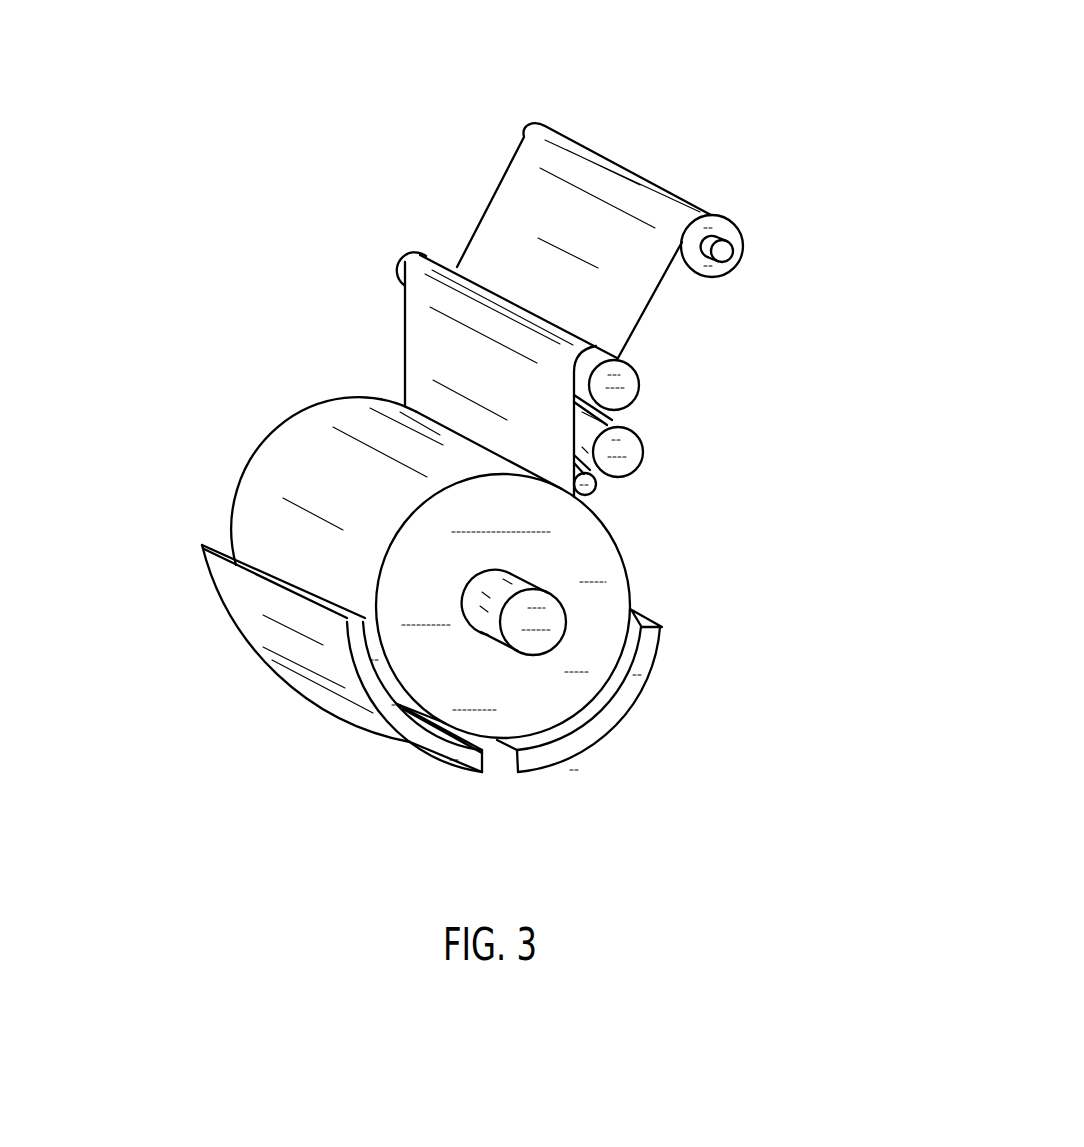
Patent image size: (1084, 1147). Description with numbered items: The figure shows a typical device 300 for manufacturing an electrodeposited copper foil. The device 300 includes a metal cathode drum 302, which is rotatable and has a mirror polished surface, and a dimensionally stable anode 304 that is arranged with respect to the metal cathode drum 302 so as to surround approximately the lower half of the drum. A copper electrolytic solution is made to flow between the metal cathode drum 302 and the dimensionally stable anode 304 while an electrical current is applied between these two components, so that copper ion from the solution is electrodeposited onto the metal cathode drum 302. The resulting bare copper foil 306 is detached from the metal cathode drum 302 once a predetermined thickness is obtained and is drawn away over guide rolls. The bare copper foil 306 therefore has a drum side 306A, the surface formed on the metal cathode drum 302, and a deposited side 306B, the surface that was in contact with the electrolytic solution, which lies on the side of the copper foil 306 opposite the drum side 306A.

The device for manufacturing an electrodeposited copper foil 300 is at (645, 97).
The metal cathode drum 302 is at (282, 473).
The dimensionally stable anode 304 is at (620, 676).
The bare copper foil 306 is at (440, 351).
The drum side 306A is at (513, 223).
The deposited side 306B is at (658, 323).